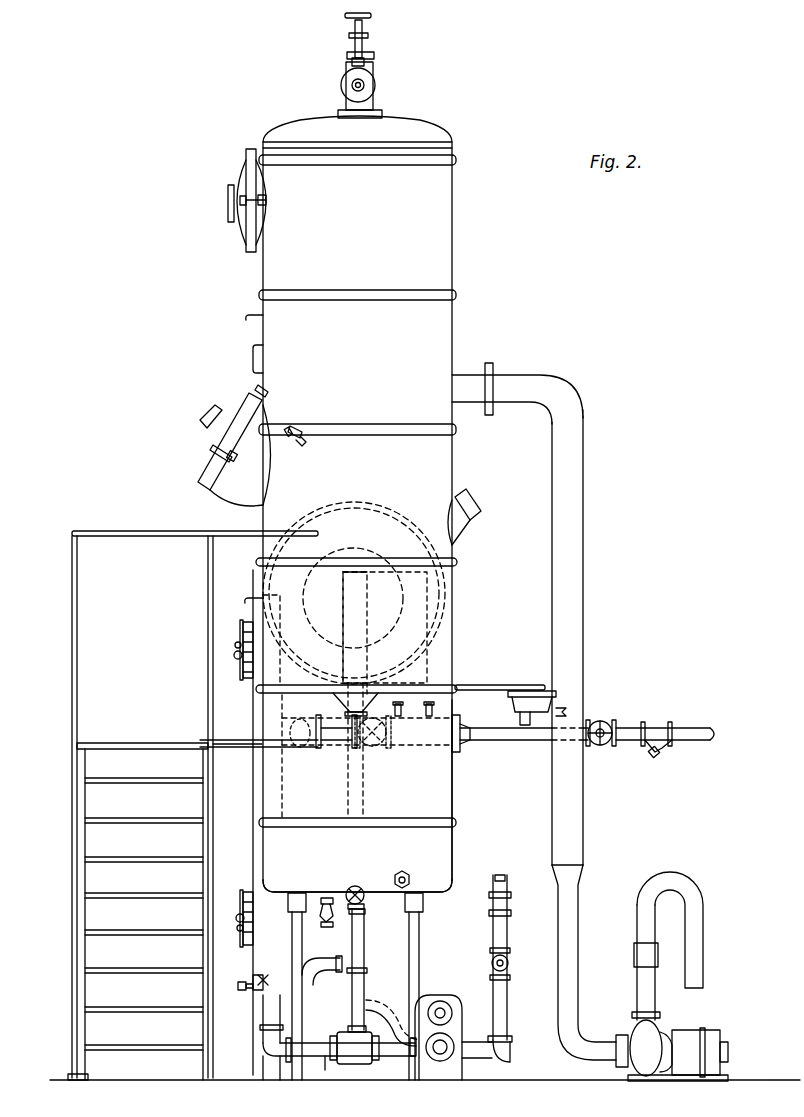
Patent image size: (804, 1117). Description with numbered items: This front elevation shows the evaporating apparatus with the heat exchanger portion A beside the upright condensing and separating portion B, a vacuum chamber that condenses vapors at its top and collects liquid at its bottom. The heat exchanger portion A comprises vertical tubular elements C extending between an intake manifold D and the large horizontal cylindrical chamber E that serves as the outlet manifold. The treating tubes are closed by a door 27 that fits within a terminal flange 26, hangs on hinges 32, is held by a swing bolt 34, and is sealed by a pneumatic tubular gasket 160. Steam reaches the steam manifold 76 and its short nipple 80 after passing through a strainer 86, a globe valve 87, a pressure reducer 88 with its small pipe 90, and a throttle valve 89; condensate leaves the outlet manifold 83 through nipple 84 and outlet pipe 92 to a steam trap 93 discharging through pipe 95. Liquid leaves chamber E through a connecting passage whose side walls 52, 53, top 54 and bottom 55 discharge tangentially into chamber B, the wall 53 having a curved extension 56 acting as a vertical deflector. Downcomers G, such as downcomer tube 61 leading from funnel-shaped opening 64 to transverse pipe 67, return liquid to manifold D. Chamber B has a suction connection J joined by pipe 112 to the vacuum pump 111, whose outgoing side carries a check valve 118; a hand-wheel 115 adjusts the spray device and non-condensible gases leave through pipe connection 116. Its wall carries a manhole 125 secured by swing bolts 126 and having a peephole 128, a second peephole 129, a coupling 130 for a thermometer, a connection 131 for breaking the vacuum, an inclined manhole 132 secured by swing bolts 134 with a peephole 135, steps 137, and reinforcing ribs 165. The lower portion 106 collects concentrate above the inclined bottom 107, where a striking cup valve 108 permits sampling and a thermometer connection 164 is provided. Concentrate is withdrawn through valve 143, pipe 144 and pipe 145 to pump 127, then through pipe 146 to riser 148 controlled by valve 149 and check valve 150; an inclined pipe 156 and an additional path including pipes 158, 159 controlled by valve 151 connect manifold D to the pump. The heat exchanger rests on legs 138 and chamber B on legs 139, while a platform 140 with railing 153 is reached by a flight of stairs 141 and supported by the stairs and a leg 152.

The hand-wheel 115 is at (366, 25).
The pipe connection 116 is at (372, 85).
The manhole 125 is at (248, 162).
The swing bolts 126 is at (240, 210).
The peephole 128 is at (228, 205).
The ribs 165 is at (458, 160).
The condensing and separating portion B is at (450, 248).
The steps 137 is at (247, 316).
The second peephole 129 is at (252, 360).
The coupling 130 is at (256, 390).
The connection 131 is at (300, 432).
The suction connection J is at (472, 375).
The peephole 135 is at (200, 434).
The swing bolts 134 is at (213, 452).
The manhole 132 is at (215, 478).
The heat exchanger portion A is at (365, 505).
The top 54 is at (356, 565).
The side wall 53 is at (343, 604).
The horizontal cylindrical chamber E is at (440, 604).
The pipe 112 is at (585, 598).
The extension 56 is at (350, 612).
The side wall 52 is at (370, 630).
The bottom 55 is at (365, 645).
The swing bolt 34 is at (240, 648).
The hinges 32 is at (243, 665).
The railing 153 is at (78, 660).
The platform 140 is at (145, 745).
The terminal flange 26 is at (262, 718).
The closure 27 is at (256, 760).
The steam manifold 76 is at (312, 730).
The funnel-shaped opening 64 is at (350, 700).
The short nipple 80 is at (312, 745).
The throttle valve 89 is at (375, 746).
The small pipe 90 is at (497, 686).
The pressure reducer 88 is at (562, 695).
The globe valve 87 is at (602, 722).
The strainer 86 is at (660, 735).
The downcomer tube 61 is at (346, 795).
The downcomer G is at (368, 812).
The lower portion 106 is at (452, 792).
The bottom 107 is at (425, 893).
The striking cup valve 108 is at (325, 898).
The valve 143 is at (362, 888).
The thermometer connection 164 is at (410, 878).
The legs 139 is at (296, 936).
The pipe 144 is at (360, 926).
The transverse pipe 67 is at (325, 975).
The outlet pipe 92 is at (366, 971).
The inclined pipe 156 is at (380, 1005).
The steam trap 93 is at (385, 1030).
The outlet manifold 83 is at (320, 958).
The nipple 84 is at (335, 972).
The tubular elements C is at (236, 925).
The valve 151 is at (254, 980).
The tubular gasket 160 is at (238, 986).
The intake manifold D is at (262, 1000).
The pipe 158 is at (266, 1022).
The pipe 159 is at (305, 1060).
The legs 138 is at (265, 1068).
The pipe 95 is at (333, 1070).
The pipe 145 is at (392, 1050).
The pump 127 is at (450, 1015).
The pipe 146 is at (497, 1060).
The riser 148 is at (503, 994).
The valve 149 is at (505, 962).
The check valve 150 is at (506, 900).
The check valve 118 is at (646, 955).
The vacuum pump 111 is at (657, 1030).
The flight of stairs 141 is at (140, 945).
The leg 152 is at (75, 1076).